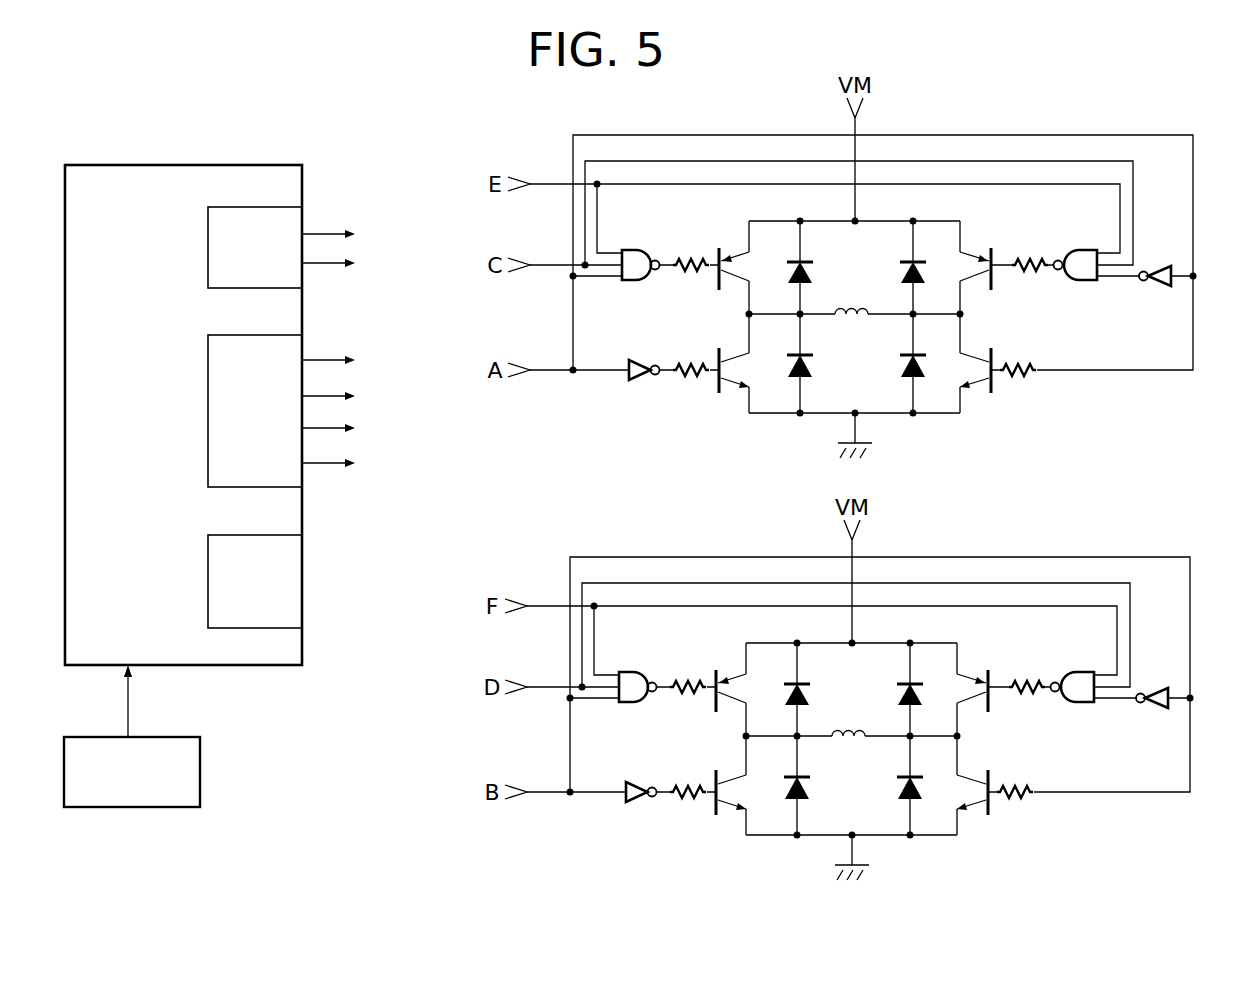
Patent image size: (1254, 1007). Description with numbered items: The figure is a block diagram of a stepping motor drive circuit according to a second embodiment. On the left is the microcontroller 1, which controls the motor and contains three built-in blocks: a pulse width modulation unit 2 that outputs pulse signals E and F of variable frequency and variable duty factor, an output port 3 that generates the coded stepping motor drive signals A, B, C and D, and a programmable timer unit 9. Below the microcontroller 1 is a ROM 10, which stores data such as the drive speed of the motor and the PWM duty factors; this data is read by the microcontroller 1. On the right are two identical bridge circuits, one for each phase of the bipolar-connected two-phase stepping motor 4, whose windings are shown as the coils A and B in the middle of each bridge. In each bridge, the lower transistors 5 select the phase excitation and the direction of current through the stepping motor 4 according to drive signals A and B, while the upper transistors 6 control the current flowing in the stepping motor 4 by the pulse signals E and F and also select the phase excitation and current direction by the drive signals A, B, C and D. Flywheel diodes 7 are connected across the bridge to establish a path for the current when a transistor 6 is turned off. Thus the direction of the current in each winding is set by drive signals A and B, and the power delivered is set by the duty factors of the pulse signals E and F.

The microcontroller 1 is at (296, 164).
The pulse width modulation unit 2 is at (305, 220).
The output port 3 is at (305, 353).
The bipolar-connected 2-phase stepping motor 4 is at (858, 317).
The transistor 5 is at (728, 393).
The transistor 6 is at (737, 250).
The flywheel diode 7 is at (812, 372).
The programmable timer unit 9 is at (297, 554).
The ROM 10 is at (200, 749).